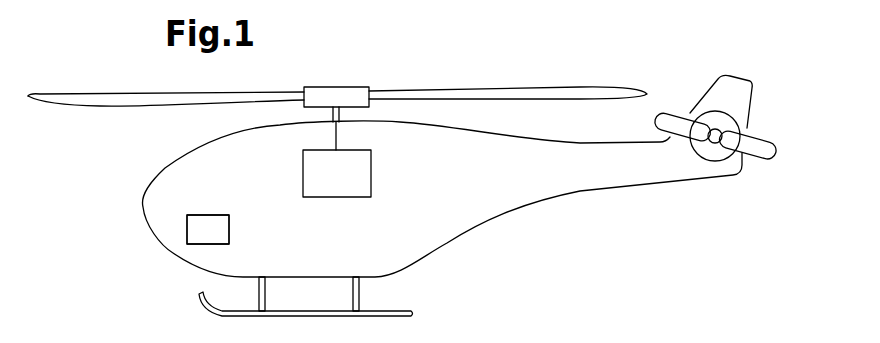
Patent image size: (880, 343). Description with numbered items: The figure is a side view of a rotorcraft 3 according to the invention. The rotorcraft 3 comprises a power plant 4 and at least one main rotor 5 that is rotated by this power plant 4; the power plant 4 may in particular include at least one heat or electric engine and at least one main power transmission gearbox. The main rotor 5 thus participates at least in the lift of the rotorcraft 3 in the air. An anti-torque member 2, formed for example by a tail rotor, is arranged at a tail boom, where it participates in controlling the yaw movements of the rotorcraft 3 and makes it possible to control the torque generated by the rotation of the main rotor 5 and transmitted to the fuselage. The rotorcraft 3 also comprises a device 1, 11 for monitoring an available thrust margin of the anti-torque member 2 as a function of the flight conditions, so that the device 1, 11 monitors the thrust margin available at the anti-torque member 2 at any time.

The device for monitoring an available thrust margin 1 is at (196, 225).
The device for monitoring an available thrust margin 11 is at (208, 229).
The anti-torque member 2 is at (782, 133).
The rotorcraft 3 is at (504, 236).
The power plant 4 is at (357, 165).
The main rotor 5 is at (509, 88).